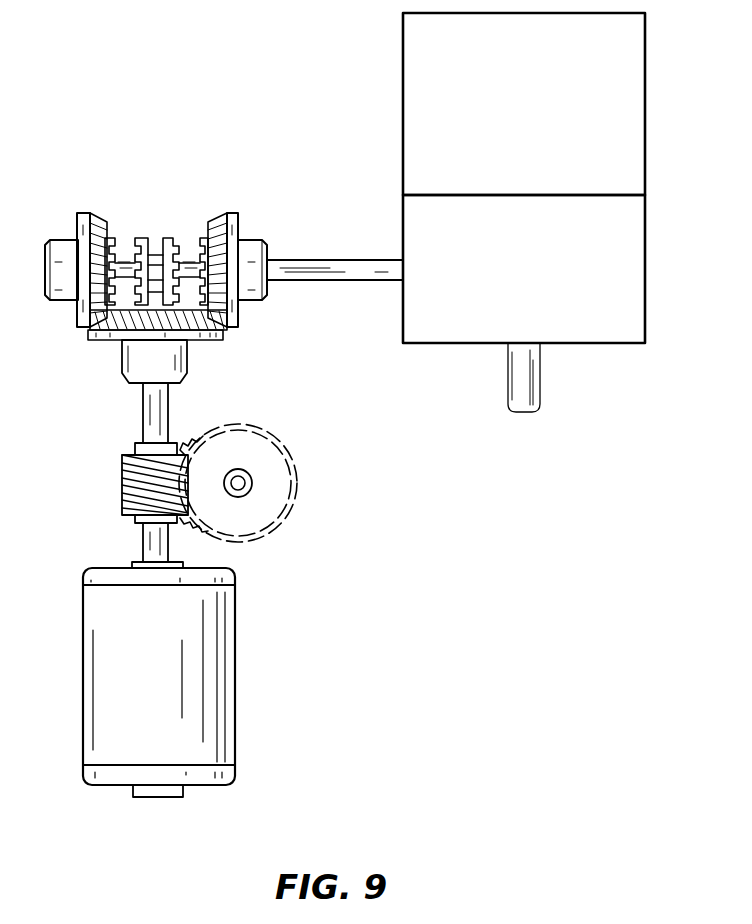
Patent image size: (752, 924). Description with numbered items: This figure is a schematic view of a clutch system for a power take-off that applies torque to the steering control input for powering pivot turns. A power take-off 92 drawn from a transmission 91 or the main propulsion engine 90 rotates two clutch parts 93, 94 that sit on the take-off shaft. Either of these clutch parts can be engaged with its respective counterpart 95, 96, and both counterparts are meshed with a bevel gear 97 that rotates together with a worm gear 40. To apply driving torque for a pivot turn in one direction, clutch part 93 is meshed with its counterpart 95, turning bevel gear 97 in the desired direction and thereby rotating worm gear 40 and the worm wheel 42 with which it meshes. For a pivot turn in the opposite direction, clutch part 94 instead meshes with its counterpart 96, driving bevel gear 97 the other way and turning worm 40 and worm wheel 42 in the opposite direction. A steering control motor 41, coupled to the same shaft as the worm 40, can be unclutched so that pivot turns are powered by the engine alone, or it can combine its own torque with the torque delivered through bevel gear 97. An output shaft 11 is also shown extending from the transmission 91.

The output shaft 11 is at (540, 388).
The worm gear 40 is at (122, 473).
The steering control motor 41 is at (235, 690).
The worm wheel 42 is at (268, 503).
The main propulsion engine 90 is at (646, 110).
The transmission 91 is at (646, 250).
The power take-off 92 is at (328, 258).
The clutch part 93 is at (133, 235).
The clutch part 94 is at (159, 234).
The clutch part counterpart 95 is at (79, 215).
The clutch part counterpart 96 is at (220, 218).
The bevel gear 97 is at (107, 343).